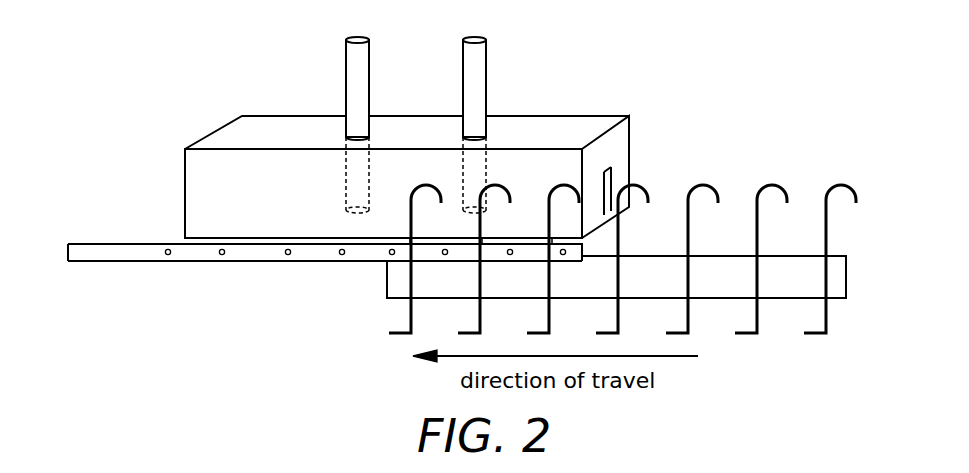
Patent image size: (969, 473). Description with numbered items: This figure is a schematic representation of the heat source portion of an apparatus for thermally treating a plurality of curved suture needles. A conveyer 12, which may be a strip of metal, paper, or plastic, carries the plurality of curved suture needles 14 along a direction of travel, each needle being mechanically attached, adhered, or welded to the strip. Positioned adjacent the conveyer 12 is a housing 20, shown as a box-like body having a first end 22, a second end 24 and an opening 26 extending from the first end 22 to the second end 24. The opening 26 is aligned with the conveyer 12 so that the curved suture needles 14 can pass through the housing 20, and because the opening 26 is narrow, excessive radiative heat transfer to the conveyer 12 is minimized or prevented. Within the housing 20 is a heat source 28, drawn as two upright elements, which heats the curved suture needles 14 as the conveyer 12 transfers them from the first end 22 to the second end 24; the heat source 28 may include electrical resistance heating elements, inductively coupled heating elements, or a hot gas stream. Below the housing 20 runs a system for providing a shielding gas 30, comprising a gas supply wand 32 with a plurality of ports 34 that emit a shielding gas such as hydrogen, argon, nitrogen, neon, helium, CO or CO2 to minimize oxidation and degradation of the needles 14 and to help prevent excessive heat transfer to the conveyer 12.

The conveyer 12 is at (847, 275).
The curved suture needles 14 is at (619, 243).
The housing 20 is at (557, 116).
The first end 22 is at (610, 116).
The second end 24 is at (207, 140).
The opening 26 is at (612, 176).
The heat source 28 is at (463, 87).
The system for providing a shielding gas 30 is at (88, 243).
The gas supply wand 32 is at (245, 263).
The ports 34 is at (219, 250).